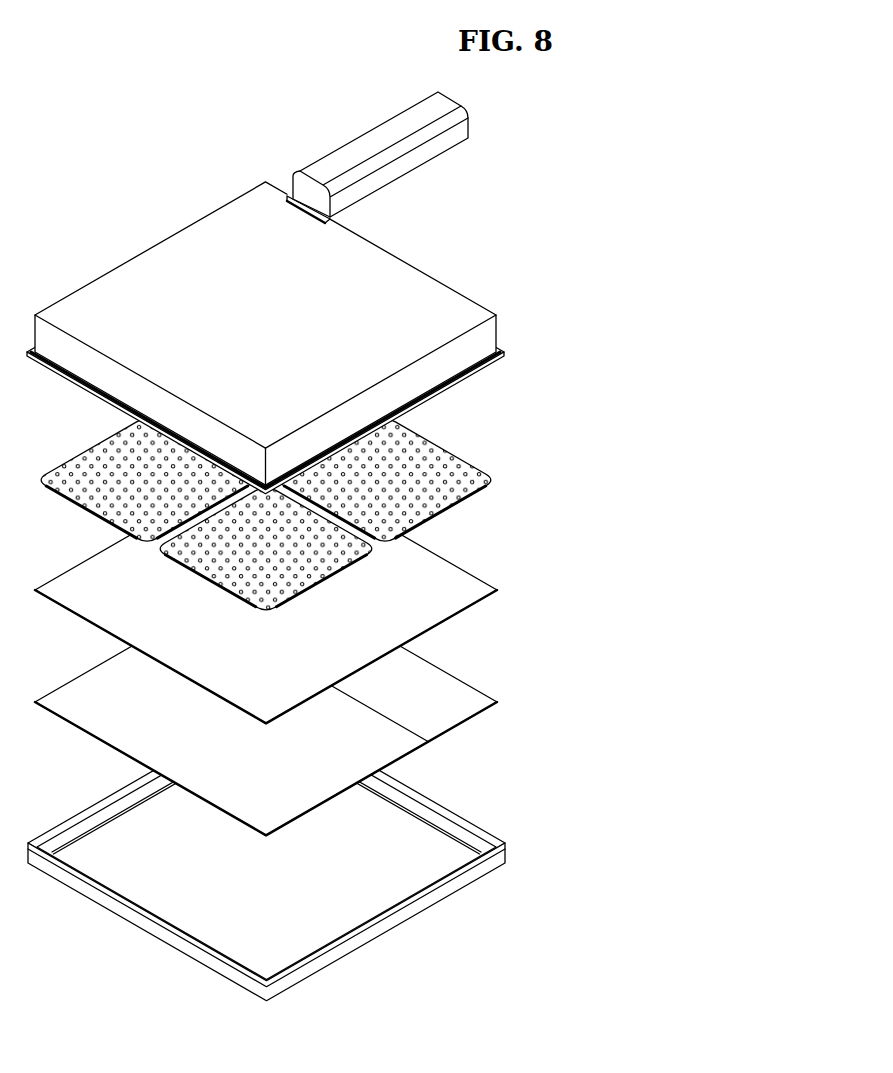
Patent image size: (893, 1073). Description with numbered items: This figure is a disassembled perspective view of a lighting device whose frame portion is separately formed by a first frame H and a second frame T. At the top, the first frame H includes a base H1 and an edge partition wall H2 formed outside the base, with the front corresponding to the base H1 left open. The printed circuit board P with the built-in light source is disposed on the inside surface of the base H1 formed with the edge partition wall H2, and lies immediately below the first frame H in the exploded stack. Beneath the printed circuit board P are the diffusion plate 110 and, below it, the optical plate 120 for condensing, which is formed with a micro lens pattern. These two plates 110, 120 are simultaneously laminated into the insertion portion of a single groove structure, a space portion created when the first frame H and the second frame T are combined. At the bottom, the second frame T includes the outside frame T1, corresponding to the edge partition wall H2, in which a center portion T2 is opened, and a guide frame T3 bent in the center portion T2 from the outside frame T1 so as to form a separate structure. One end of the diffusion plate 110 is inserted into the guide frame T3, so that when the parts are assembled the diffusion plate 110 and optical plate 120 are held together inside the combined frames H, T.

The first frame H is at (301, 293).
The base H1 is at (420, 290).
The edge partition wall H2 is at (485, 330).
The printed circuit board P is at (457, 467).
The diffusion plate 110 is at (474, 586).
The optical plate 120 is at (447, 691).
The second frame T is at (266, 852).
The outside frame T1 is at (355, 937).
The center portion T2 is at (366, 890).
The guide frame T3 is at (453, 836).